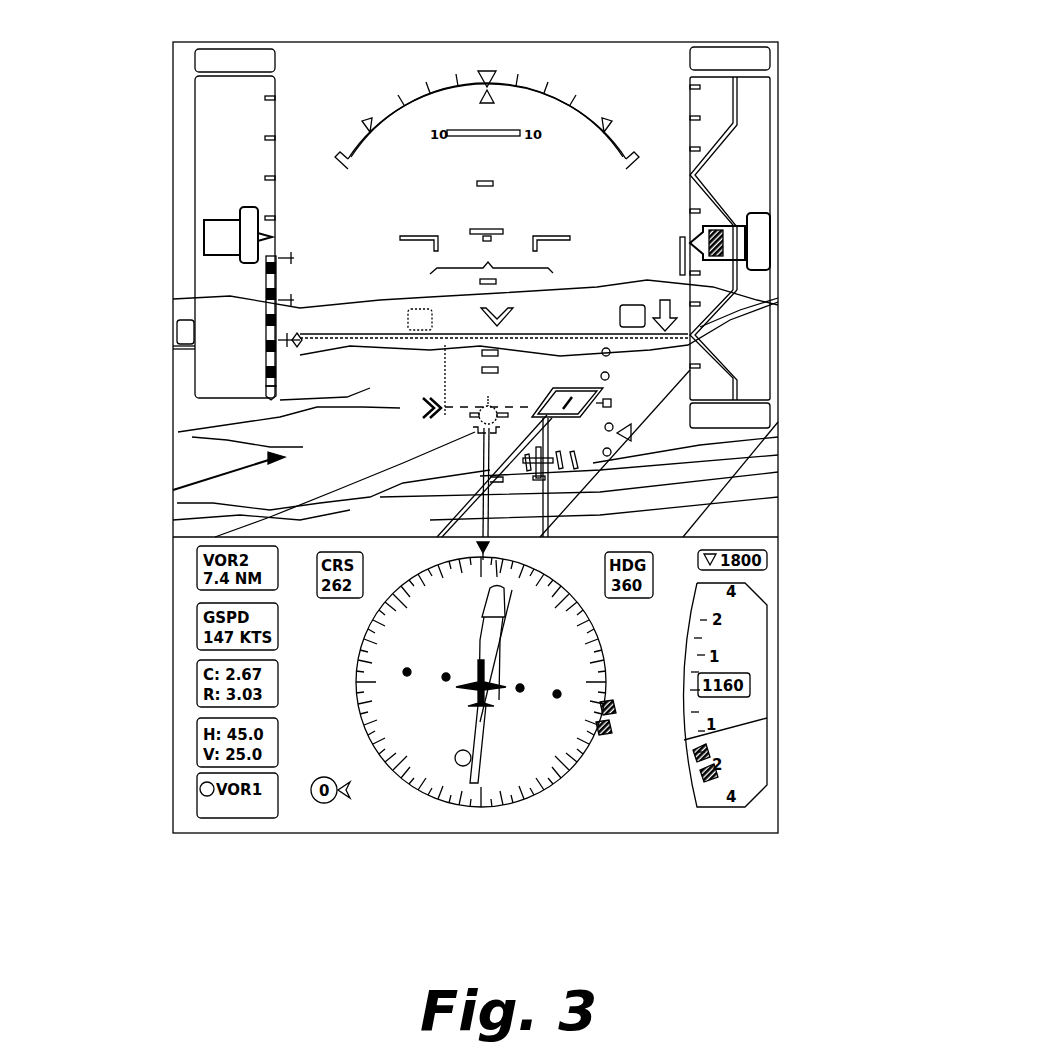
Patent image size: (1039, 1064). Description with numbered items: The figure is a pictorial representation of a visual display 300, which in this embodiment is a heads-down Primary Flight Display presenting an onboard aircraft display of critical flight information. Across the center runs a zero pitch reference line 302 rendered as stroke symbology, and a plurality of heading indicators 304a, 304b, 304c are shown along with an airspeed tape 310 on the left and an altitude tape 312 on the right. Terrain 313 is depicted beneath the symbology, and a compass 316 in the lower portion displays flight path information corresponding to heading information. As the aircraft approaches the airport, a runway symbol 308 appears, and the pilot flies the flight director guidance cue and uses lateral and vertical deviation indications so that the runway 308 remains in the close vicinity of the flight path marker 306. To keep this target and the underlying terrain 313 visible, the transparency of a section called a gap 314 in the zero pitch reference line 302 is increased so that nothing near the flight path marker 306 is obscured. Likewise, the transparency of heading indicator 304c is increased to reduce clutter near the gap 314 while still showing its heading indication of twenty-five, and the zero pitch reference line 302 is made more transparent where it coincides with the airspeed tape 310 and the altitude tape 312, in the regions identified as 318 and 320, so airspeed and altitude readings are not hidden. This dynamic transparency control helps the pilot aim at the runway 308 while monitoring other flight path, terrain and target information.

The visual display 300 is at (818, 82).
The zero pitch reference line 302 is at (374, 334).
The heading indicator 304a is at (187, 318).
The heading indicator 304b is at (633, 305).
The heading indicator 304c is at (408, 317).
The flight path marker 306 is at (478, 430).
The runway symbol 308 is at (601, 391).
The airspeed tape 310 is at (205, 175).
The altitude tape 312 is at (760, 192).
The terrain 313 is at (178, 486).
The gap 314 is at (487, 262).
The compass 316 is at (481, 548).
The region of increased transparency at airspeed tape 318 is at (212, 360).
The region of increased transparency at altitude tape 320 is at (760, 313).